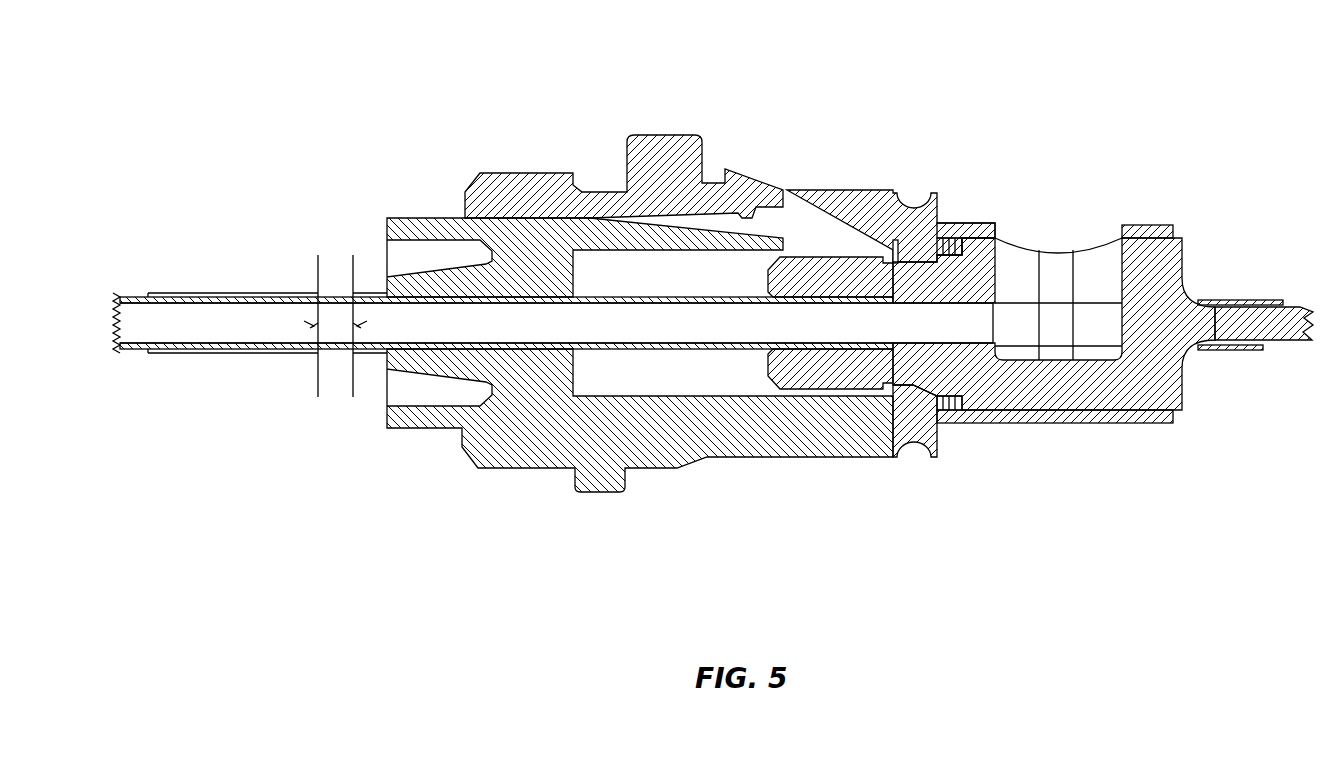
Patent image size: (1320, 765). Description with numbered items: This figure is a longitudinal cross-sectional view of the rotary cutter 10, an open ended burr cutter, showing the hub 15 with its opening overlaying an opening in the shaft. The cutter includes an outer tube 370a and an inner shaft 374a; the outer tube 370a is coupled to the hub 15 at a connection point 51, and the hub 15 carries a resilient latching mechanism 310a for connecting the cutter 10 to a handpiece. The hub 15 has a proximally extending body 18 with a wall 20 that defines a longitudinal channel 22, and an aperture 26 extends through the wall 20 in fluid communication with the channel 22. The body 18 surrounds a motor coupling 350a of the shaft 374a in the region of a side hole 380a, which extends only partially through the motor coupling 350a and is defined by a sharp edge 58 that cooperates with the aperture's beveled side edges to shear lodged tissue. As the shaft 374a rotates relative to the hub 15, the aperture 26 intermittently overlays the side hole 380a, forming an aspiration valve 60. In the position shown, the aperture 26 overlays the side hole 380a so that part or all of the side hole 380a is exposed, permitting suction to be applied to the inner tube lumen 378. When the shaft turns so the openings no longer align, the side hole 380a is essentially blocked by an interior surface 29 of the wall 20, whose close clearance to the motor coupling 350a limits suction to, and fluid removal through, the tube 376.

The rotary cutter 10 is at (557, 27).
The hub 15 is at (744, 138).
The body 18 is at (1055, 423).
The wall 20 is at (1095, 428).
The longitudinal channel 22 is at (1224, 382).
The aperture 26 is at (1068, 250).
The interior surface 29 is at (1000, 398).
The connection point 51 is at (590, 367).
The edge 58 is at (1110, 230).
The aspiration valve 60 is at (1018, 221).
The resilient latching mechanism 310a is at (542, 182).
The motor coupling 350a is at (1168, 406).
The outer tube 370a is at (245, 292).
The inner shaft 374a is at (1170, 292).
The tube 376 is at (273, 347).
The inner tube lumen 378 is at (137, 323).
The side hole 380a is at (1040, 250).